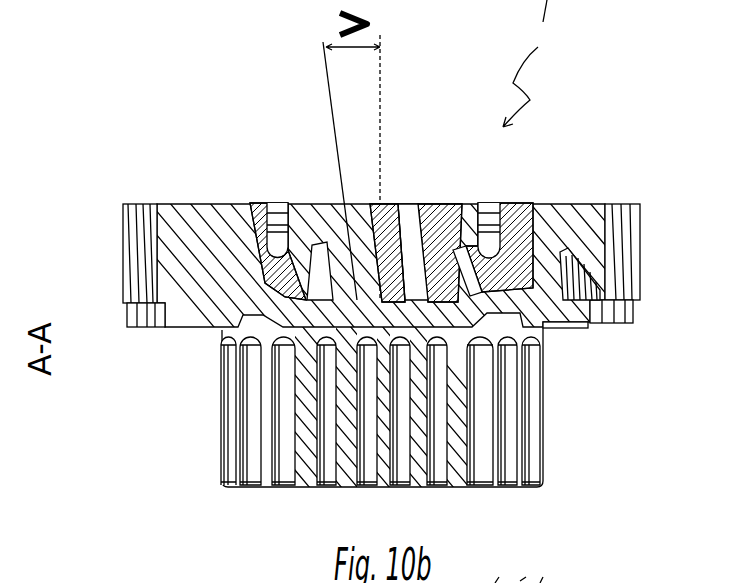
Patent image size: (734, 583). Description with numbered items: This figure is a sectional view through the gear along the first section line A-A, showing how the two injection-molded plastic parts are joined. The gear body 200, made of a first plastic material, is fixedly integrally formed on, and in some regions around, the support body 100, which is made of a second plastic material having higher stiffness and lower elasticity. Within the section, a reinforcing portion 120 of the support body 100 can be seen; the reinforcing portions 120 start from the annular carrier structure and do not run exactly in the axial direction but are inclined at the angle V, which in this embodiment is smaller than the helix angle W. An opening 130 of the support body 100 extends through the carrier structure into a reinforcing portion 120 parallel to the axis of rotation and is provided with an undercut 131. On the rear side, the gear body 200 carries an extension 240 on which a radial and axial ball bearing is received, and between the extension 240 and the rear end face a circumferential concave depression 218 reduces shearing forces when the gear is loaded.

The support body 100 is at (446, 219).
The reinforcing portion 120 is at (386, 247).
The opening 130 is at (277, 239).
The undercut 131 is at (290, 222).
The gear body 200 is at (540, 243).
The circumferential concave depression 218 is at (260, 332).
The extension 240 is at (527, 447).